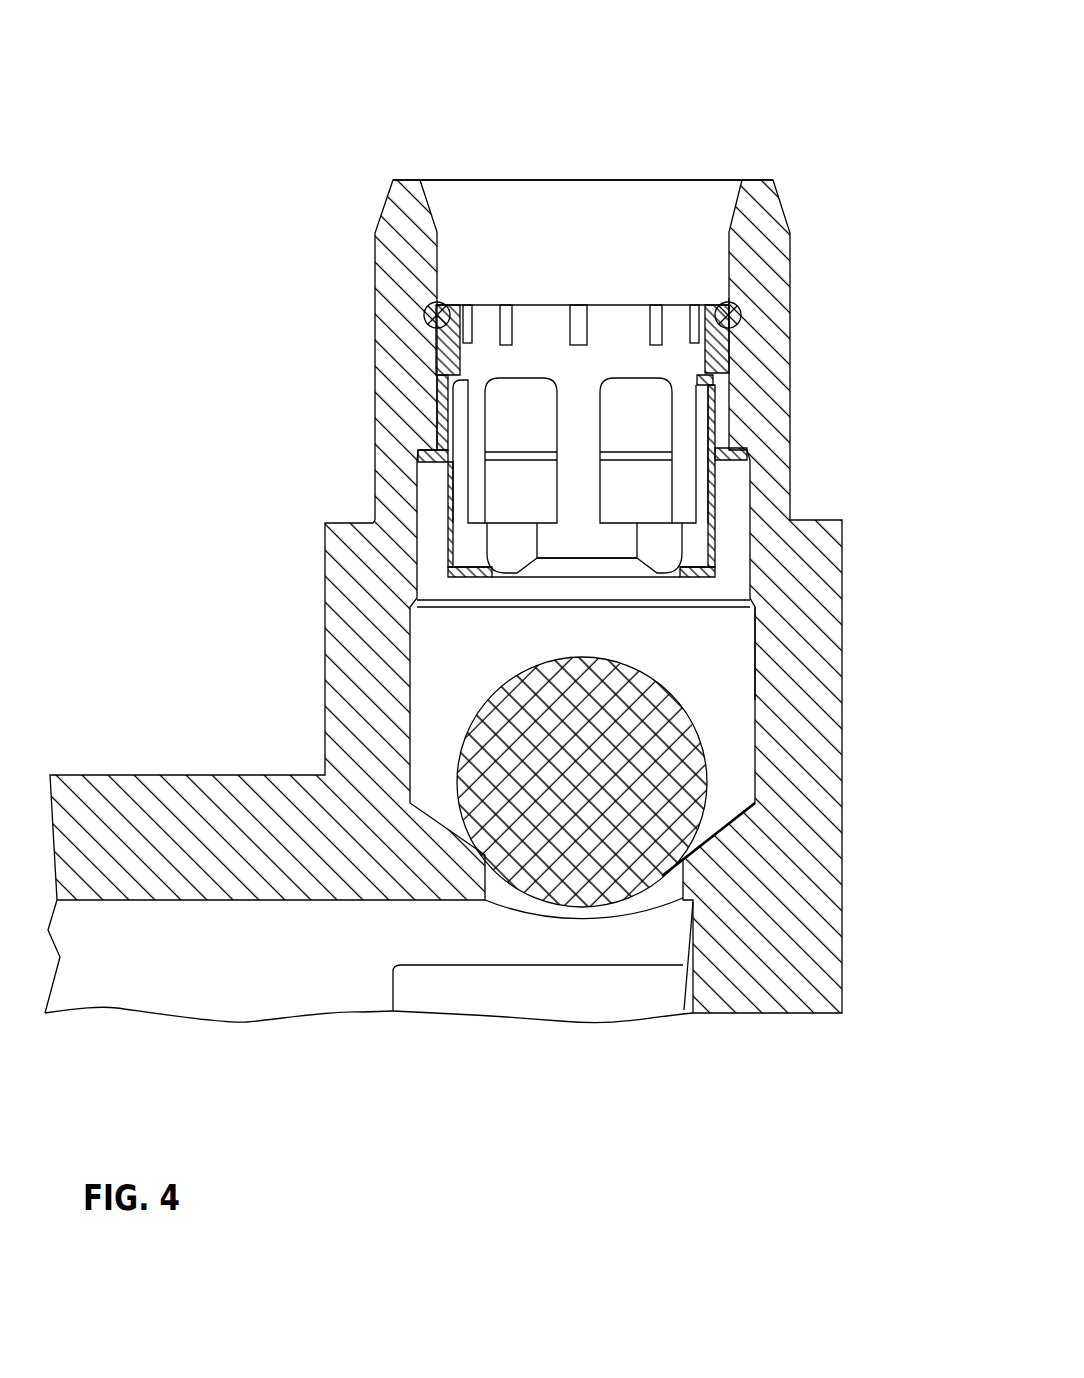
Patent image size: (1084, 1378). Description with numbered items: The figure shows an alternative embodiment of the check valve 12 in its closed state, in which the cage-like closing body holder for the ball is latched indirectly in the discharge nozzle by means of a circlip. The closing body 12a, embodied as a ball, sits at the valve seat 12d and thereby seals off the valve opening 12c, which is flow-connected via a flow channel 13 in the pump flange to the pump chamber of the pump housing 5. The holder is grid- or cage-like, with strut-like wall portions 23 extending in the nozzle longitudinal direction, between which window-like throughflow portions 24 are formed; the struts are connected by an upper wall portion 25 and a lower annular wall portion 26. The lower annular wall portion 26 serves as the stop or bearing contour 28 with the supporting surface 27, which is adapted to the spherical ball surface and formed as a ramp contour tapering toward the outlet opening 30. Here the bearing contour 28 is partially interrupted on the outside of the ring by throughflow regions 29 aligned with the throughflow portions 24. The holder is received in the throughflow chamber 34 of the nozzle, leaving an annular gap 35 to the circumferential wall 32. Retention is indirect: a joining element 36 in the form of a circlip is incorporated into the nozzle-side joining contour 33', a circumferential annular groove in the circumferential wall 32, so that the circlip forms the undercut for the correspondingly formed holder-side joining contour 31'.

The pump housing 5 is at (808, 972).
The check valve 12 is at (424, 128).
The closing body 12a is at (647, 752).
The valve opening 12c is at (582, 913).
The valve seat 12d is at (716, 823).
The flow channel 13 is at (276, 958).
The strut-like wall portions 23 is at (577, 413).
The throughflow portions 24 is at (523, 430).
The upper wall portion 25 is at (542, 333).
The lower annular wall portion 26 is at (505, 543).
The supporting surface 27 is at (557, 567).
The bearing contour 28 is at (557, 567).
The throughflow regions 29 is at (465, 585).
The outlet opening 30 is at (622, 213).
The holder-side joining contour 31' is at (454, 200).
The circumferential wall 32 is at (800, 640).
The nozzle-side joining contour 33' is at (828, 331).
The throughflow chamber 34 is at (435, 513).
The annular gap 35 is at (435, 513).
The joining element 36 is at (732, 306).